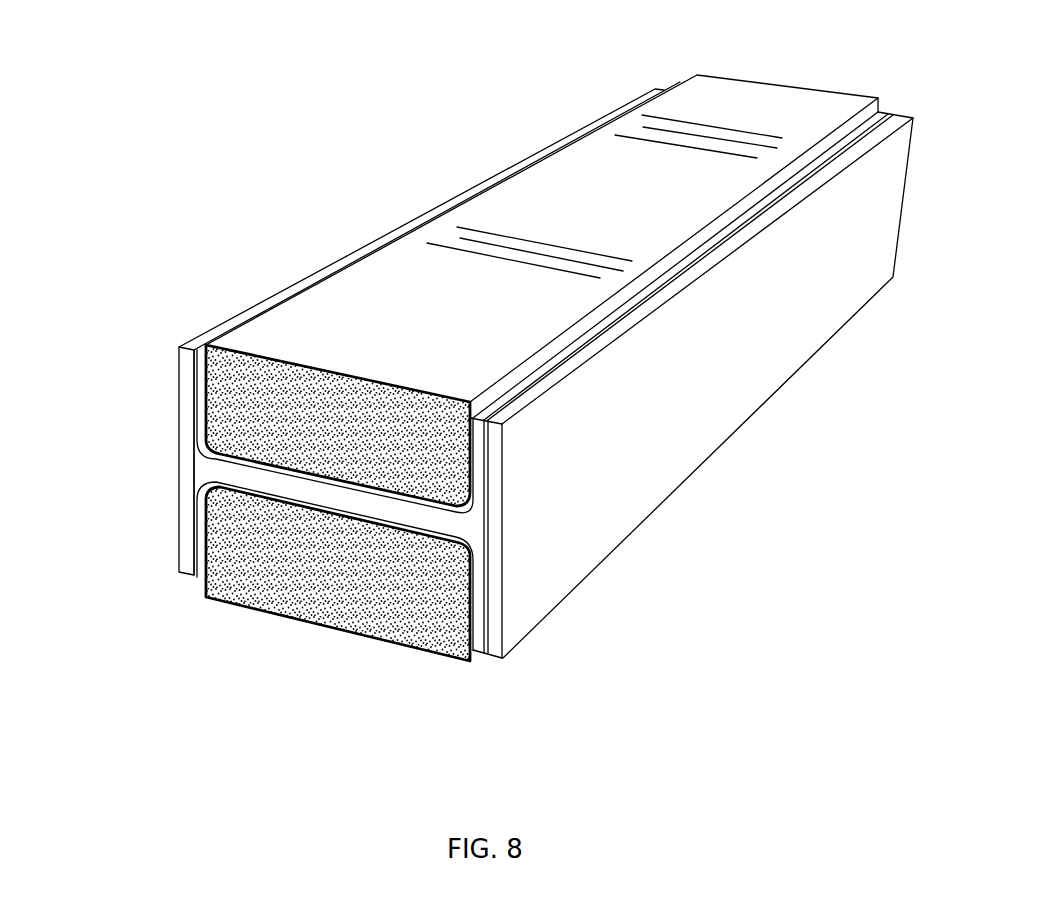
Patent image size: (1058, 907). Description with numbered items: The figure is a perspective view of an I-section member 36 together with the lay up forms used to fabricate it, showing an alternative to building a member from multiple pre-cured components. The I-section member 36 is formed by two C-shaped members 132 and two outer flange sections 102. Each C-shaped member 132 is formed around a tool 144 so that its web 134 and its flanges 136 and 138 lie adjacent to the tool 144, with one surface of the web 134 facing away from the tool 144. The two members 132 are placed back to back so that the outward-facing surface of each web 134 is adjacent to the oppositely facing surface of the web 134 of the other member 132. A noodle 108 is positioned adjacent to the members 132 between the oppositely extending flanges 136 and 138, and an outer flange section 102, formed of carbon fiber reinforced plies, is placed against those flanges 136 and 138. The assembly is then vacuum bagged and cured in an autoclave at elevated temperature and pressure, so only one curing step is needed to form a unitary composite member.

The I-section member 36 is at (838, 407).
The outer flange section 102 is at (652, 92).
The noodle 108 is at (196, 462).
The C-shaped member 132 is at (203, 407).
The web 134 is at (296, 476).
The flange 136 is at (198, 412).
The flange 138 is at (485, 484).
The tool 144 is at (788, 104).